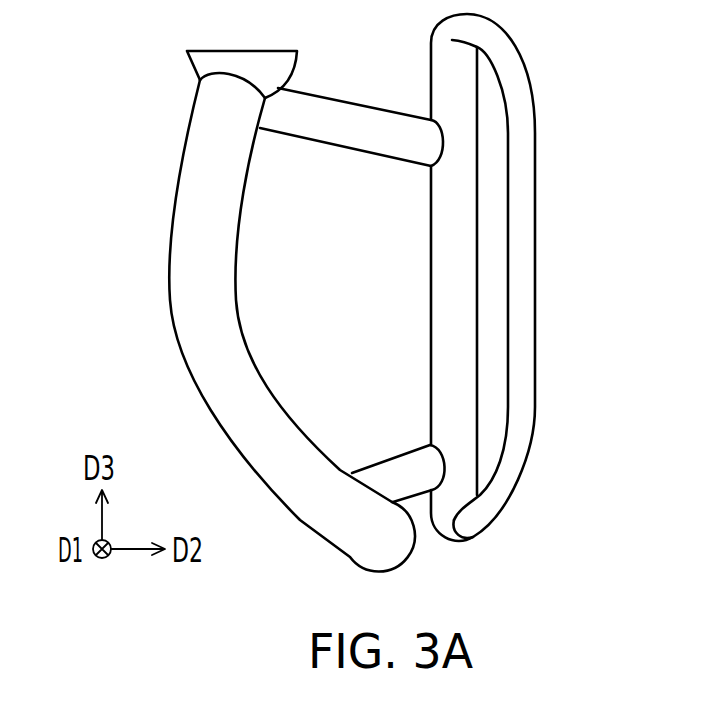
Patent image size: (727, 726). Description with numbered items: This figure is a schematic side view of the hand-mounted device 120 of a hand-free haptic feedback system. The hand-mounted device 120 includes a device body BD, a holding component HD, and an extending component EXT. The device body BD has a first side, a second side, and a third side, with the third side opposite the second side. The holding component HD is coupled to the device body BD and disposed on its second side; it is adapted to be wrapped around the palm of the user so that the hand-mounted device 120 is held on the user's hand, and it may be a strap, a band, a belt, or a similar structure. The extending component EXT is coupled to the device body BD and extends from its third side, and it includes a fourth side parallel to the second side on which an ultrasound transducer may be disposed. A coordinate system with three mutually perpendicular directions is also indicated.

The hand-mounted device 120 is at (347, 293).
The extending component EXT is at (200, 62).
The device body BD is at (442, 80).
The holding component HD is at (515, 75).